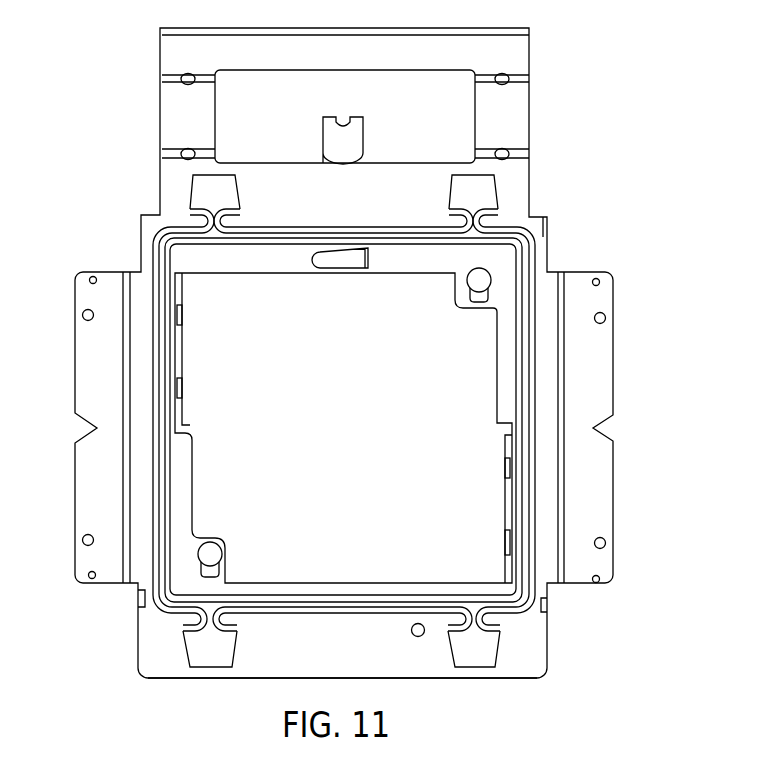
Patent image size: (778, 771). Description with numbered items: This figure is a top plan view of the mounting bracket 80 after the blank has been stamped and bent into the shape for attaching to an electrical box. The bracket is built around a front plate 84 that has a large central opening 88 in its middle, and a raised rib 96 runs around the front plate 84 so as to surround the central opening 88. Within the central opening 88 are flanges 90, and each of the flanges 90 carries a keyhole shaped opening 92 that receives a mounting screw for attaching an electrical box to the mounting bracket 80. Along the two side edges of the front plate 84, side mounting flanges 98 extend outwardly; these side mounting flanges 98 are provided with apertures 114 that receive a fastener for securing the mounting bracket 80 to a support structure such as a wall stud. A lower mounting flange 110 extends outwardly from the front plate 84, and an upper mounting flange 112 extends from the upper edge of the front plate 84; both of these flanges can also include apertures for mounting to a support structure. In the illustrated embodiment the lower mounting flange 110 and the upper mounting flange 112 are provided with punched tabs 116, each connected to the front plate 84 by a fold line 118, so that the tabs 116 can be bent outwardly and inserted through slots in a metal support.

The mounting bracket 80 is at (636, 172).
The front plate 84 is at (519, 350).
The central opening 88 is at (486, 559).
The flanges 90 is at (505, 409).
The keyhole shaped opening 92 is at (474, 286).
The raised rib 96 is at (152, 252).
The side mounting flanges 98 is at (75, 383).
The lower mounting flange 110 is at (540, 645).
The upper mounting flange 112 is at (513, 182).
The apertures 114 is at (83, 315).
The punched tabs 116 is at (203, 202).
The fold line 118 is at (490, 618).